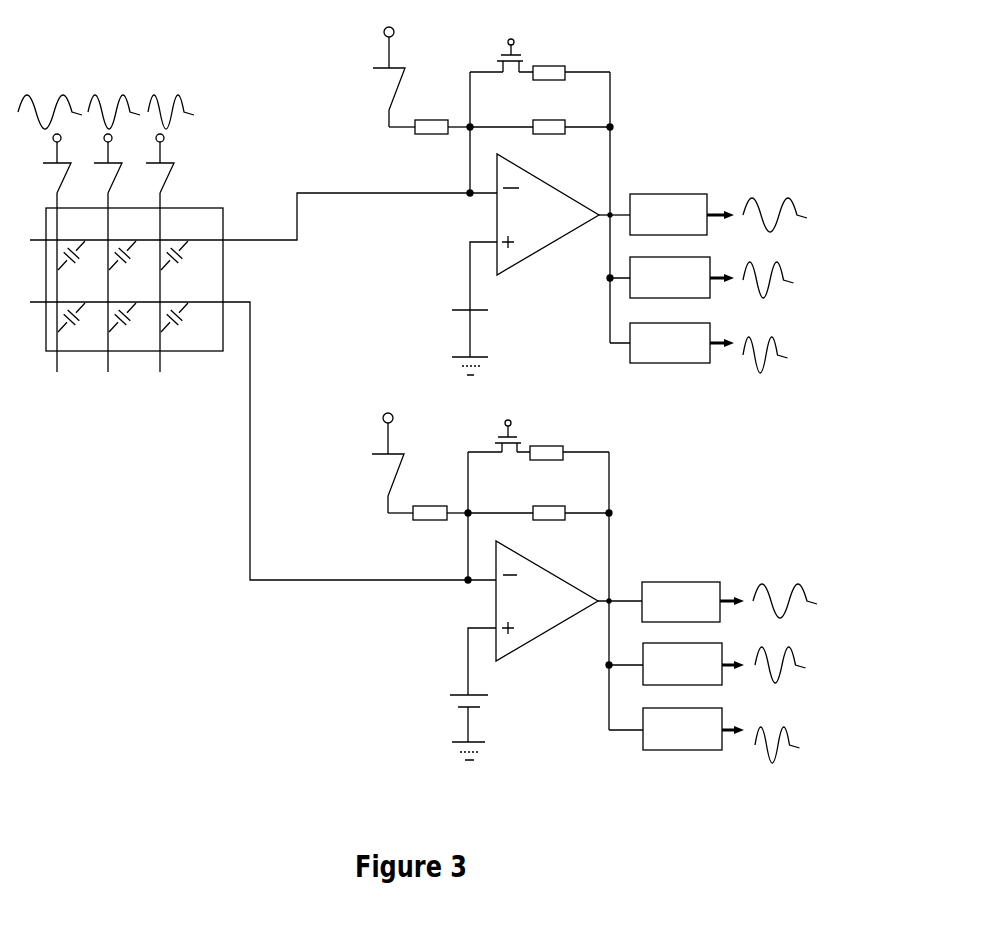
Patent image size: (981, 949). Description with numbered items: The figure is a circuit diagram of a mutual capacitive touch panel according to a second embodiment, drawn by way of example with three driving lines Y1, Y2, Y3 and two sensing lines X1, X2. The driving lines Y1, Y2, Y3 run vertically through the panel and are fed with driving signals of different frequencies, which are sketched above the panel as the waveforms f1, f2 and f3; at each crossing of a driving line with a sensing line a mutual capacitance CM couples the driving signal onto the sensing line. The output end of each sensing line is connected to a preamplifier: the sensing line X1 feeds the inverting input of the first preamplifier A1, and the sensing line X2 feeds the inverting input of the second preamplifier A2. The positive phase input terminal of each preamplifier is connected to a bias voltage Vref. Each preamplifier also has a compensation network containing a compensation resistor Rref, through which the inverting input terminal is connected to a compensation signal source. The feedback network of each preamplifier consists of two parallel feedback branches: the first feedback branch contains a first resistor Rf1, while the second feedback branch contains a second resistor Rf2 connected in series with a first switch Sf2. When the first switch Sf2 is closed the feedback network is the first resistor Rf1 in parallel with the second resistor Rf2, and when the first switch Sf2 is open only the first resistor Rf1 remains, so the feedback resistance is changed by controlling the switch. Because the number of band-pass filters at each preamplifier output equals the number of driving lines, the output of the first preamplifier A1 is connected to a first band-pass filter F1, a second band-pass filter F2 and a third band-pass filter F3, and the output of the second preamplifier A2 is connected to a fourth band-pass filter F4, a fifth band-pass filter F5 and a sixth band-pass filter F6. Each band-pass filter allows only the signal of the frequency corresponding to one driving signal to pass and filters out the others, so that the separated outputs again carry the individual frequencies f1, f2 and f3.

The first frequency signal f1 is at (417, 346).
The second frequency signal f2 is at (447, 378).
The third frequency signal f3 is at (474, 418).
The sensing line X1 is at (259, 215).
The sensing line X2 is at (258, 431).
The driving line Y1 is at (56, 298).
The driving line Y2 is at (107, 298).
The driving line Y3 is at (164, 298).
The mutual capacitor CM is at (130, 298).
The first switch Sf2 is at (510, 232).
The second resistor Rf2 is at (548, 255).
The first resistor Rf1 is at (549, 309).
The compensation resistor Rref is at (441, 306).
The first preamplifier A1 is at (548, 215).
The second preamplifier A2 is at (547, 608).
The bias voltage Vref is at (490, 501).
The first band-pass filter F1 is at (668, 199).
The second band-pass filter F2 is at (670, 267).
The third band-pass filter F3 is at (670, 334).
The fourth band-pass filter F4 is at (681, 586).
The fifth band-pass filter F5 is at (682, 654).
The sixth band-pass filter F6 is at (682, 719).